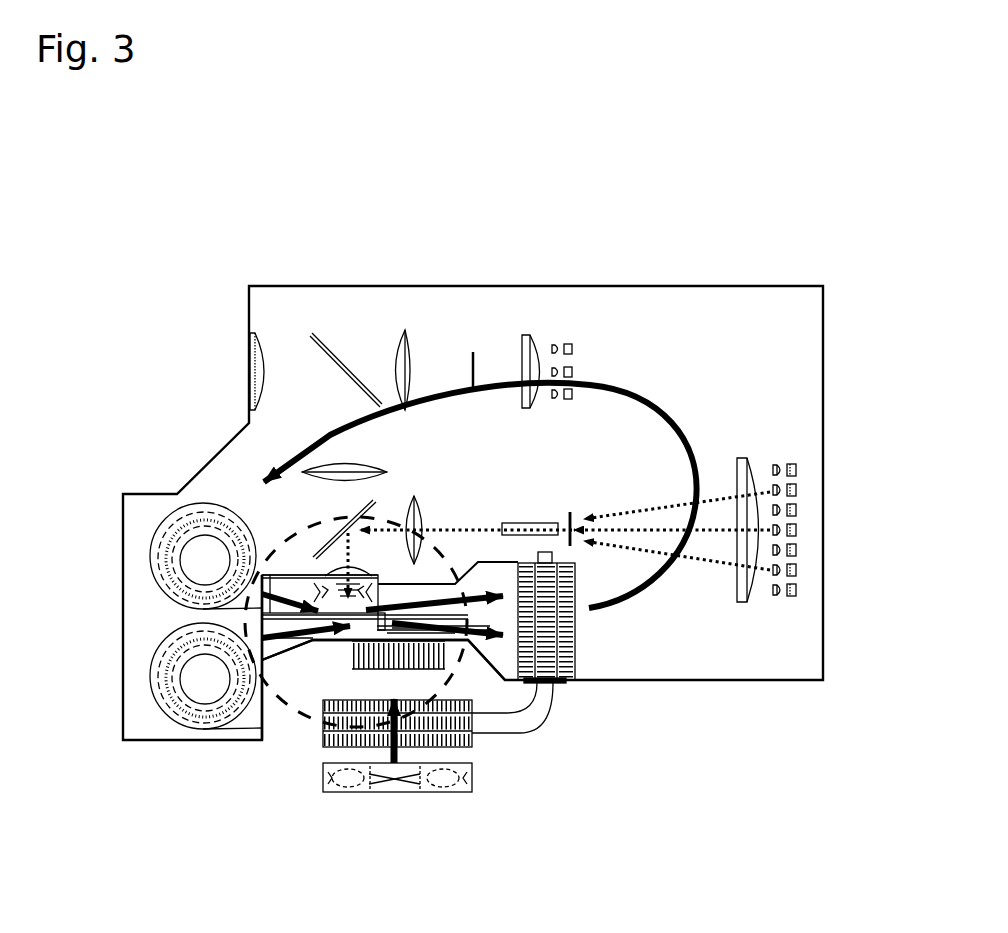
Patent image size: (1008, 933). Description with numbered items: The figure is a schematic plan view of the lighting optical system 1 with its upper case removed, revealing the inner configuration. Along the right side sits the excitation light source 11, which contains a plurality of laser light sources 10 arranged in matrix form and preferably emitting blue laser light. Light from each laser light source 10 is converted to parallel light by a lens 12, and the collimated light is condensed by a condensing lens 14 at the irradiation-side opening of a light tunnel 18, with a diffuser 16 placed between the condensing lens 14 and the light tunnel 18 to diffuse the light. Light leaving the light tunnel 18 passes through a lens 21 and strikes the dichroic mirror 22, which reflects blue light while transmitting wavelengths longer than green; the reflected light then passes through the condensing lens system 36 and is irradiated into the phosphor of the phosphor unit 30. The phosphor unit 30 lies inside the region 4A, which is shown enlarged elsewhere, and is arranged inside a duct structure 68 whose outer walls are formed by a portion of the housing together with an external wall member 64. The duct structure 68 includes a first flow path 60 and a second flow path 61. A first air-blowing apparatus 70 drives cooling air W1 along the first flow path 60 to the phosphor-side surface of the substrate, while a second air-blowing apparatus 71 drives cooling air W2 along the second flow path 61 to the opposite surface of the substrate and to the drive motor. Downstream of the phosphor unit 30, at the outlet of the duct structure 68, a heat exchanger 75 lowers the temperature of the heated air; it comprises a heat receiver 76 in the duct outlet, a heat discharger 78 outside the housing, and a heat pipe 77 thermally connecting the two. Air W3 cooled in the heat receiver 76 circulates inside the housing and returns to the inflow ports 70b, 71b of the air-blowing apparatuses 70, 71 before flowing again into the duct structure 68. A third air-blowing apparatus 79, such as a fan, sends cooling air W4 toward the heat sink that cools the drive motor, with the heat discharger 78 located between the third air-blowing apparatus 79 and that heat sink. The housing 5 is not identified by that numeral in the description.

The lighting optical system 1 is at (203, 188).
The housing 5 is at (790, 681).
The dichroic mirror 22 is at (298, 598).
The region 4A is at (347, 517).
The condensing lens system 36 is at (406, 500).
The lens 21 is at (364, 577).
The external wall member 64 is at (548, 522).
The air W3 is at (628, 392).
The light tunnel 18 is at (571, 510).
The diffuser 16 is at (572, 548).
The excitation light source 11 is at (792, 448).
The laser light source 10 is at (795, 484).
The lens 12 is at (786, 546).
The condensing lens 14 is at (752, 601).
The first flow path 60 is at (291, 593).
The cooling air W1 is at (323, 563).
The cooling air W2 is at (300, 617).
The first air-blowing apparatus 70 is at (155, 562).
The inflow port 70b is at (185, 560).
The second air-blowing apparatus 71 is at (155, 691).
The inflow port 71b is at (185, 688).
The second flow path 61 is at (264, 700).
The duct structure 68 is at (322, 650).
The phosphor unit 30 is at (366, 624).
The heat exchanger 75 is at (722, 722).
The heat receiver 76 is at (563, 640).
The heat pipe 77 is at (552, 714).
The heat discharger 78 is at (472, 742).
The third air-blowing apparatus 79 is at (350, 792).
The cooling air W4 is at (402, 752).